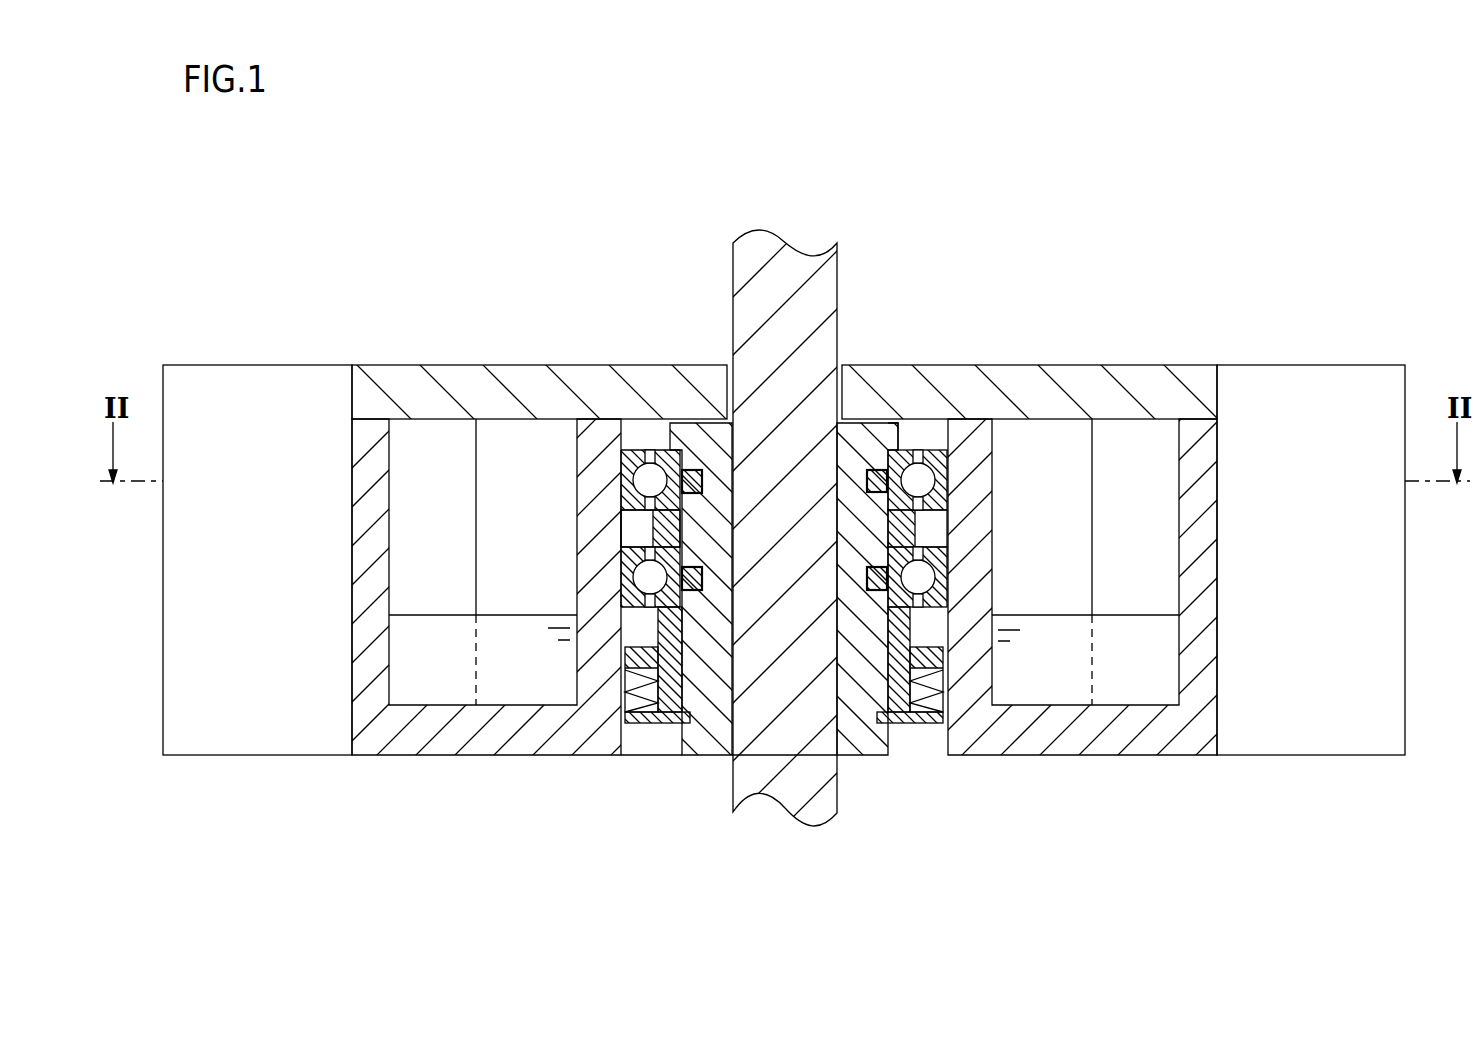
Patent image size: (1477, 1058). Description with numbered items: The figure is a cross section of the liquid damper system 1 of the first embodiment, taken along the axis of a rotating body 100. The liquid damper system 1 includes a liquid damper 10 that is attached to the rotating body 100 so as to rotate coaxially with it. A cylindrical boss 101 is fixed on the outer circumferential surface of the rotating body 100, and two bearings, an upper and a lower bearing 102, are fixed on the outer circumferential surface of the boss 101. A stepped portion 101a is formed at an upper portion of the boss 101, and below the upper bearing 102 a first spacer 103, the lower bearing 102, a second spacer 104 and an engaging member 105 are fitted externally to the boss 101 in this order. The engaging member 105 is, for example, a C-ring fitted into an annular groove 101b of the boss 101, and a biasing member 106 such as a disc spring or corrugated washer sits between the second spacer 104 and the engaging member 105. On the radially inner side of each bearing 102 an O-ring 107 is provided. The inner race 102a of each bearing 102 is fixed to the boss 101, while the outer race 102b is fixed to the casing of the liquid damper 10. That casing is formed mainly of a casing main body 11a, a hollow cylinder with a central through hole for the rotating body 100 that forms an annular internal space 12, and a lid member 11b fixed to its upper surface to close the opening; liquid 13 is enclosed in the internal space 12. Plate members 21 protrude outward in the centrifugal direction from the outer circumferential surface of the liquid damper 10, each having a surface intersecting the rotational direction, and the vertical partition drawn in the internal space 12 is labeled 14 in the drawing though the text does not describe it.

The liquid damper system 1 is at (186, 305).
The liquid damper 10 is at (1209, 360).
The casing main body 11a is at (997, 743).
The lid member 11b is at (1035, 382).
The internal space 12 is at (1053, 536).
The liquid 13 is at (1057, 680).
The partition wall 14 is at (438, 440).
The plate member 21 is at (250, 740).
The rotating body 100 is at (827, 288).
The boss 101 is at (858, 745).
The stepped portion 101a is at (908, 455).
The annular groove 101b is at (897, 725).
The bearing 102 is at (738, 529).
The inner race 102a is at (672, 450).
The outer race 102b is at (632, 457).
The first spacer 103 is at (662, 530).
The second spacer 104 is at (673, 675).
The engaging member 105 is at (655, 723).
The biasing member 106 is at (643, 713).
The O-ring 107 is at (881, 468).